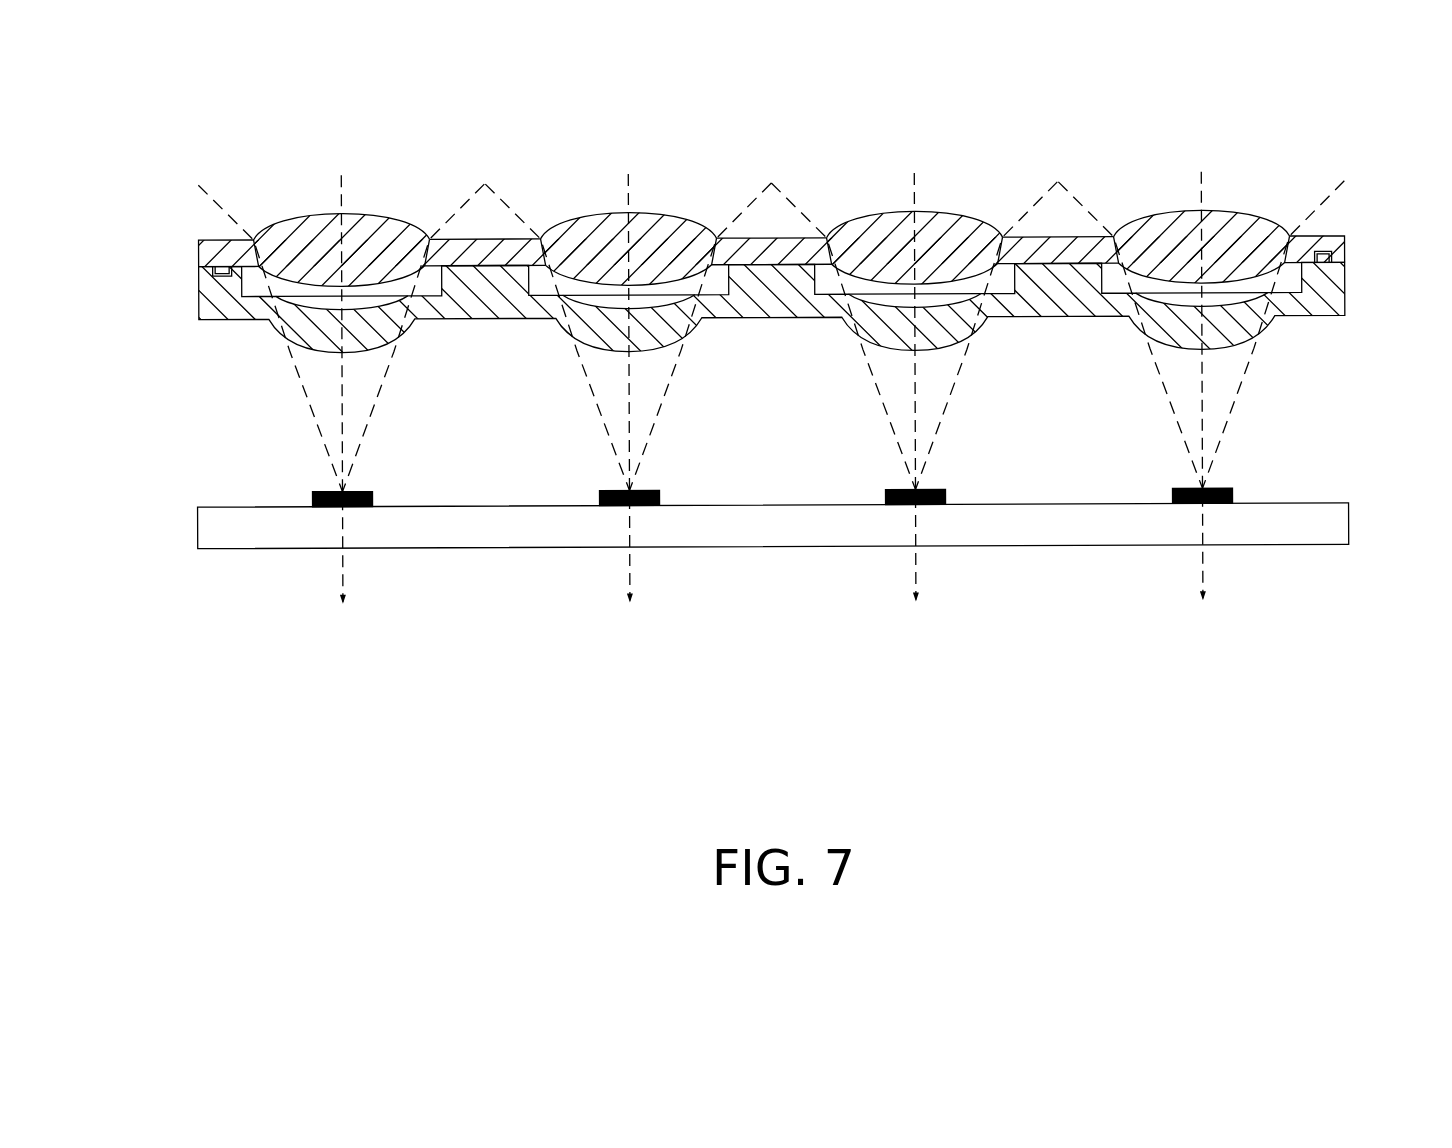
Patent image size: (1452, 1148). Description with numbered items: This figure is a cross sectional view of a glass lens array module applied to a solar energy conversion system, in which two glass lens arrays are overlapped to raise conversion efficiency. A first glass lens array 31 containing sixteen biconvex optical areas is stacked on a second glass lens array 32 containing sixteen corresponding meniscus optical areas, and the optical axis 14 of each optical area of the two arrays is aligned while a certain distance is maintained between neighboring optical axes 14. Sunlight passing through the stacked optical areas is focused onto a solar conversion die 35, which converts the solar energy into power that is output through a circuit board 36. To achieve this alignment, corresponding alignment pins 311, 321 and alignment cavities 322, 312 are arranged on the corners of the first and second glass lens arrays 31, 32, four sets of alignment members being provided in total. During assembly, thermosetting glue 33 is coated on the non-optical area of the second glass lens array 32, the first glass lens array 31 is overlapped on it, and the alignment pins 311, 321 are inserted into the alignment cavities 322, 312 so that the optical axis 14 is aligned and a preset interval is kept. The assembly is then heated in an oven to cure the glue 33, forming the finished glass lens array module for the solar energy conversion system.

The optical axis 14 is at (790, 378).
The first glass lens array 31 is at (222, 242).
The alignment pin 311 is at (222, 266).
The alignment cavity 312 is at (1345, 239).
The alignment pin 321 is at (1321, 267).
The alignment cavity 322 is at (222, 279).
The second glass lens array 32 is at (227, 309).
The thermosetting glue 33 is at (1066, 270).
The solar conversion die 35 is at (362, 491).
The circuit board 36 is at (1332, 525).